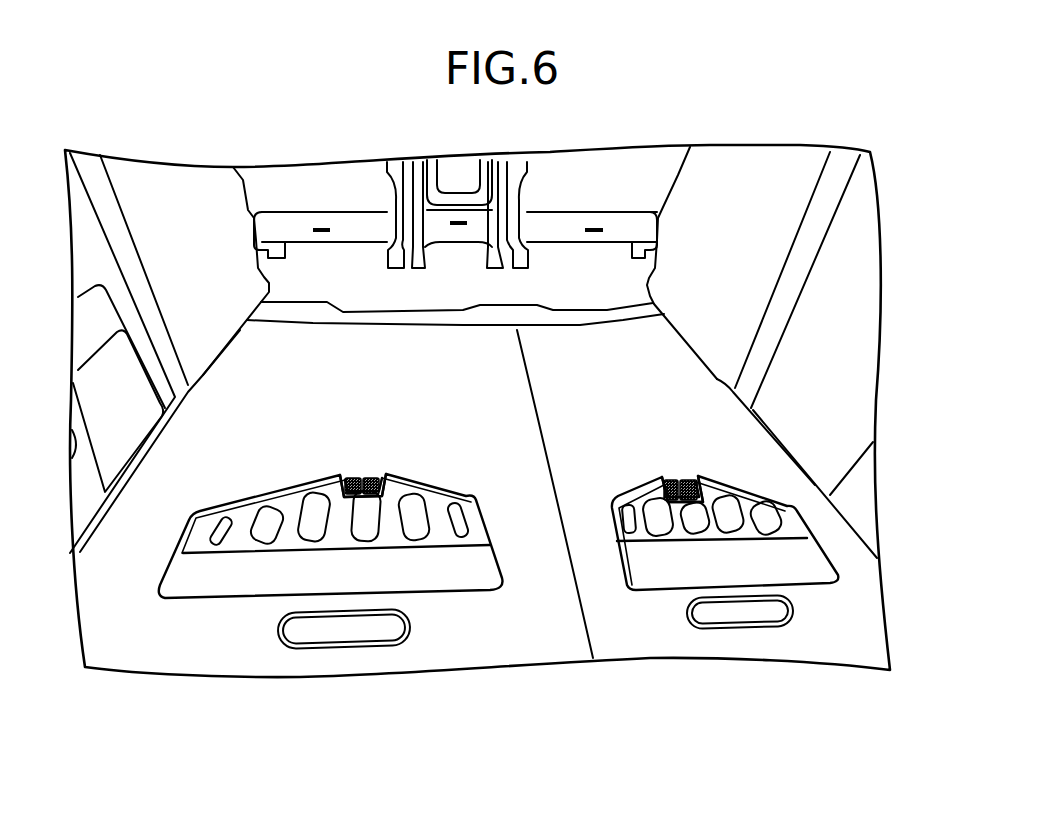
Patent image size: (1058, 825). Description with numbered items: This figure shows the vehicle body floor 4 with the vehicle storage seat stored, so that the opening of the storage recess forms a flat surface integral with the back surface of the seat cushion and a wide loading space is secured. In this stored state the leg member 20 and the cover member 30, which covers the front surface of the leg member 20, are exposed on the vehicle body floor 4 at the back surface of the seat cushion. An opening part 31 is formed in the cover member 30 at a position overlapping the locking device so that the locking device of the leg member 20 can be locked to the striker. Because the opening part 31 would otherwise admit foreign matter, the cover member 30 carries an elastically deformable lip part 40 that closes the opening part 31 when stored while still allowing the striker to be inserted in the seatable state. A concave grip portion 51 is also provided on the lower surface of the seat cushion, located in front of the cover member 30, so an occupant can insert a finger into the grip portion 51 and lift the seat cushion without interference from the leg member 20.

The vehicle body floor 4 is at (537, 603).
The leg member 20 is at (410, 573).
The cover member 30 is at (290, 527).
The opening part 31 is at (337, 478).
The lip part 40 is at (373, 475).
The grip portion 51 is at (360, 627).